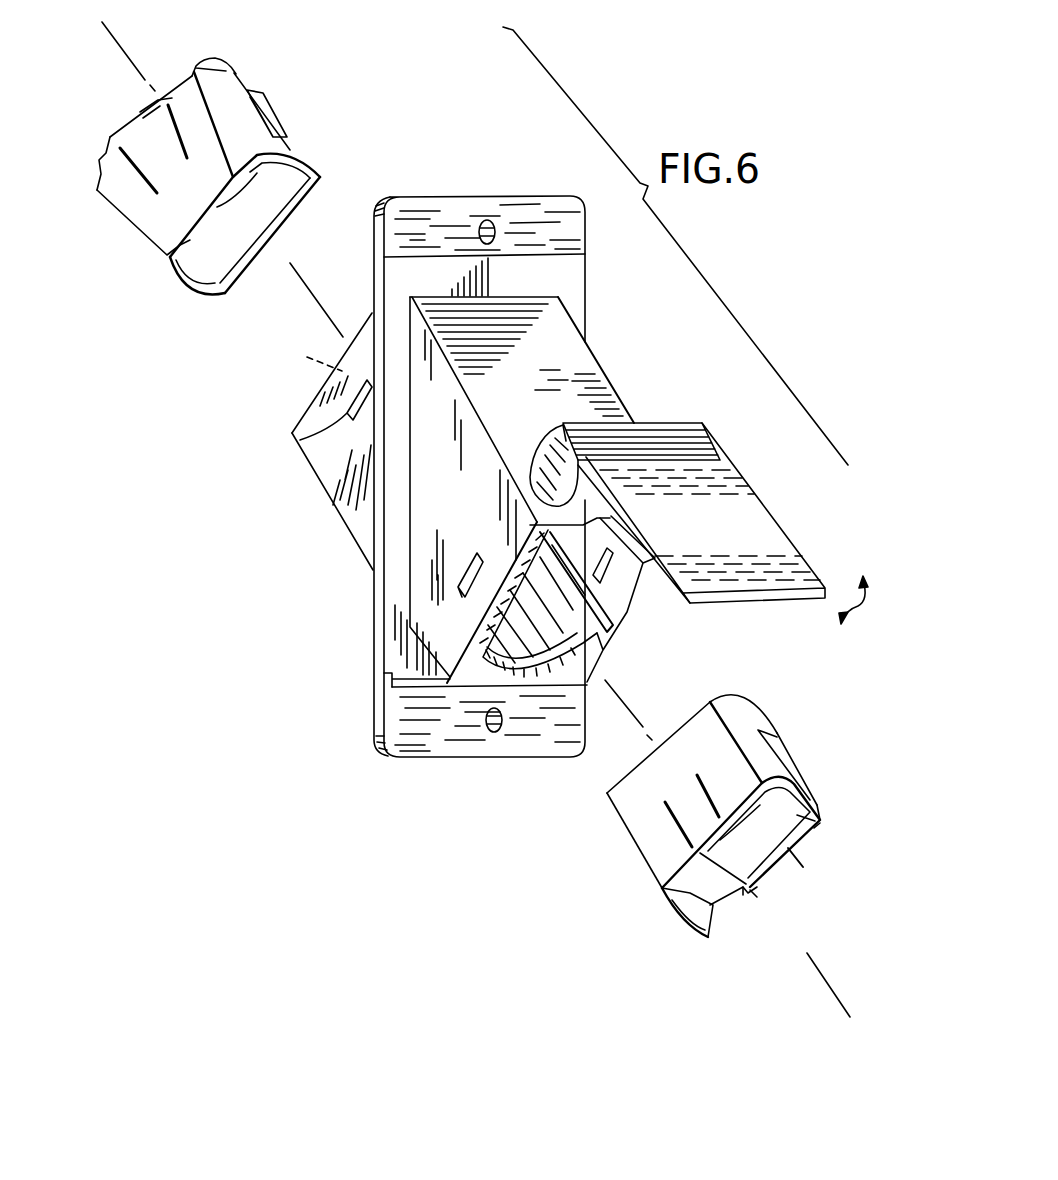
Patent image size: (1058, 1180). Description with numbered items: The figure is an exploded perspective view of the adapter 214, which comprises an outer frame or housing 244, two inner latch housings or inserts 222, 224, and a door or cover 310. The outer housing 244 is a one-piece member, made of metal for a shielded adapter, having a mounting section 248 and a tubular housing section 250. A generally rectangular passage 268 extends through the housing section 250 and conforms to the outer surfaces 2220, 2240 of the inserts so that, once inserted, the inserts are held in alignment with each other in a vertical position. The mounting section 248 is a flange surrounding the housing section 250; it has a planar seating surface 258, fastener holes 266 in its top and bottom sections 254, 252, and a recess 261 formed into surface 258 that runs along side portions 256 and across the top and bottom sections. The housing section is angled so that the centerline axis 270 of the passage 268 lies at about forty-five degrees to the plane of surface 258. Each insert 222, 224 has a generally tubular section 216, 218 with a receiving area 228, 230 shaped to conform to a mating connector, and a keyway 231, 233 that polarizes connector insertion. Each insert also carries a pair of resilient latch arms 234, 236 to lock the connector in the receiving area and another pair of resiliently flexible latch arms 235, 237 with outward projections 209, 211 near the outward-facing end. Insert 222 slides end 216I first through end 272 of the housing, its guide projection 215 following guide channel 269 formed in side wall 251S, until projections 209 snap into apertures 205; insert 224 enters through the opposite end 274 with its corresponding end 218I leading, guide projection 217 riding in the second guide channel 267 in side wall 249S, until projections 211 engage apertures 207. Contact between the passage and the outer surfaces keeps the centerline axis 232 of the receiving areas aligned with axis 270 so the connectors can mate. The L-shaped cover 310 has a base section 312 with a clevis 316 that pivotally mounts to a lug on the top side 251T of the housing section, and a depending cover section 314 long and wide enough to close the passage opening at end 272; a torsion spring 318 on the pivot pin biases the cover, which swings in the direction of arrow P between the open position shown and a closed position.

The apertures 205 is at (457, 573).
The apertures 207 is at (326, 443).
The outward projection 209 is at (758, 728).
The outward projection 211 is at (130, 120).
The adapter 214 is at (274, 670).
The guide projection 215 is at (747, 885).
The tubular section 216 is at (820, 806).
The end of insert 216I is at (730, 700).
The guide projection 217 is at (225, 115).
The tubular section 218 is at (183, 80).
The rim side 218I is at (283, 230).
The latch insert 222 is at (655, 868).
The outer surface 2220 is at (623, 800).
The latch insert 224 is at (157, 248).
The outer surface 2240 is at (127, 220).
The receiving area 228 is at (780, 862).
The receiving area 230 is at (197, 270).
The keyway 231 is at (275, 158).
The centerline axis 232 is at (118, 41).
The keyway 233 is at (746, 893).
The resilient latch arms 234 is at (787, 767).
The resiliently flexible latch arms 235 is at (687, 810).
The resilient latch arms 236 is at (258, 112).
The resiliently flexible latch arms 237 is at (153, 153).
The outer housing 244 is at (330, 481).
The mounting section 248 is at (419, 755).
The side wall 249S is at (473, 514).
The housing section 250 is at (354, 531).
The side wall 251S is at (628, 397).
The top side 251T is at (533, 365).
The bottom section 252 is at (403, 729).
The top section 254 is at (577, 229).
The side portions 256 is at (374, 621).
The planar surface 258 is at (430, 228).
The recess 261 is at (390, 658).
The fastener holes 266 is at (490, 220).
The second guide channel 267 is at (301, 356).
The passage 268 is at (590, 655).
The guide channel 269 is at (592, 543).
The centerline axis 270 is at (632, 718).
The end 272 is at (632, 618).
The end 274 is at (305, 415).
The cover 310 is at (790, 556).
The base section 312 is at (561, 431).
The cover section 314 is at (674, 544).
The clevis 316 is at (530, 476).
The spring 318 is at (720, 435).
The arrow P is at (865, 600).